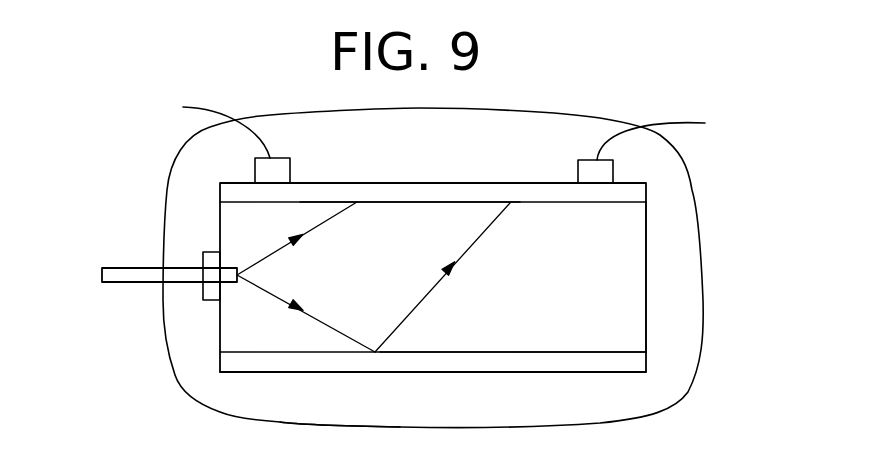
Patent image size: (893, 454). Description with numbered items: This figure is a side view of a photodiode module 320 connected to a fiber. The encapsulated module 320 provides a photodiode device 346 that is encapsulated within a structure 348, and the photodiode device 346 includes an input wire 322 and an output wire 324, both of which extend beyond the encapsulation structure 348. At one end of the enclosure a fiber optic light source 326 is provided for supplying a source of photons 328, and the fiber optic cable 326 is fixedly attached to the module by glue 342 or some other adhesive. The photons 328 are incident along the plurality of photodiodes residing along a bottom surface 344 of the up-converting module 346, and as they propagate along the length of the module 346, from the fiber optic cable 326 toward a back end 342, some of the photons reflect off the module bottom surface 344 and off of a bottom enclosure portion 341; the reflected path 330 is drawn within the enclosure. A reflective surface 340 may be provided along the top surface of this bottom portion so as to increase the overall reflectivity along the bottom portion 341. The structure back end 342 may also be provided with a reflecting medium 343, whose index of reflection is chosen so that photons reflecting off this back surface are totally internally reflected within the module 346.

The photodiode module 320 is at (587, 105).
The input wire 322 is at (210, 113).
The output wire 324 is at (680, 123).
The fiber optic light source 326 is at (102, 270).
The photons 328 is at (268, 292).
The reflected light beam 330 is at (430, 291).
The reflective surface 340 is at (262, 372).
The bottom enclosure portion 341 is at (580, 352).
The back end 342 is at (440, 183).
The reflecting medium 343 is at (646, 257).
The bottom surface 344 is at (362, 203).
The photodiode device 346 is at (487, 392).
The encapsulation structure 348 is at (703, 250).